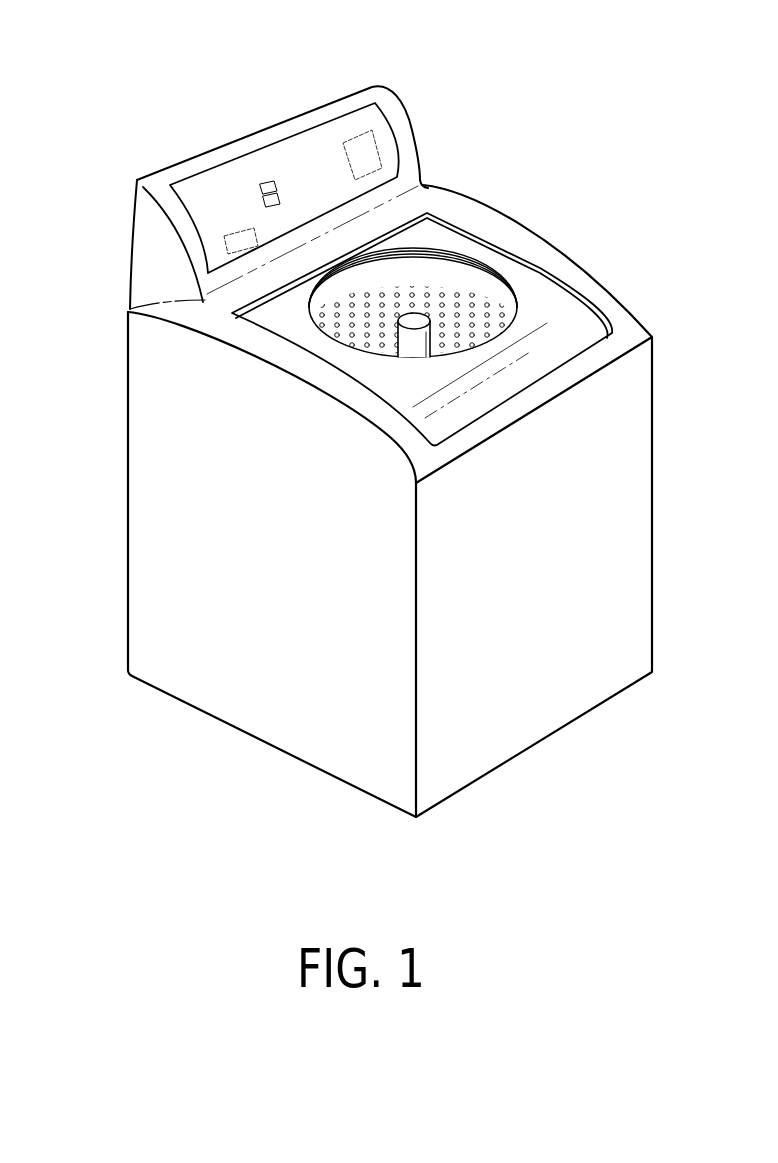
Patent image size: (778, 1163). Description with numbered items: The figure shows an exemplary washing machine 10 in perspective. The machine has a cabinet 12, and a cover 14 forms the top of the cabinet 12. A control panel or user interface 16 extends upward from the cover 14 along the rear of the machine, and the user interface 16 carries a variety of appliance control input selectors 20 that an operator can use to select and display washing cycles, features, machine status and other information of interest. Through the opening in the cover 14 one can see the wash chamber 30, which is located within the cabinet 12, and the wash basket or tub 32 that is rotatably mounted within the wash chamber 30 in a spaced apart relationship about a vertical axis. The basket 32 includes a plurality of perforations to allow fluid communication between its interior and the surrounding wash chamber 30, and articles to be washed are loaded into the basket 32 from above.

The washing machine 10 is at (193, 65).
The cabinet 12 is at (147, 465).
The cover 14 is at (575, 267).
The control panel or user interface 16 is at (350, 128).
The appliance control input selectors 20 is at (270, 180).
The wash chamber 30 is at (420, 286).
The wash basket or tub 32 is at (470, 285).